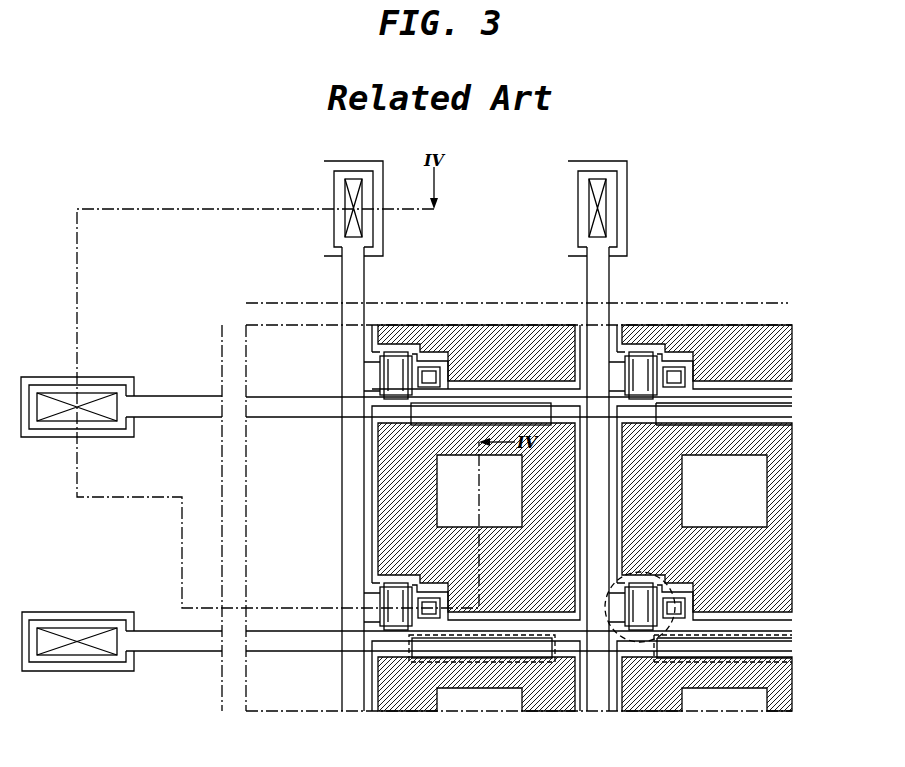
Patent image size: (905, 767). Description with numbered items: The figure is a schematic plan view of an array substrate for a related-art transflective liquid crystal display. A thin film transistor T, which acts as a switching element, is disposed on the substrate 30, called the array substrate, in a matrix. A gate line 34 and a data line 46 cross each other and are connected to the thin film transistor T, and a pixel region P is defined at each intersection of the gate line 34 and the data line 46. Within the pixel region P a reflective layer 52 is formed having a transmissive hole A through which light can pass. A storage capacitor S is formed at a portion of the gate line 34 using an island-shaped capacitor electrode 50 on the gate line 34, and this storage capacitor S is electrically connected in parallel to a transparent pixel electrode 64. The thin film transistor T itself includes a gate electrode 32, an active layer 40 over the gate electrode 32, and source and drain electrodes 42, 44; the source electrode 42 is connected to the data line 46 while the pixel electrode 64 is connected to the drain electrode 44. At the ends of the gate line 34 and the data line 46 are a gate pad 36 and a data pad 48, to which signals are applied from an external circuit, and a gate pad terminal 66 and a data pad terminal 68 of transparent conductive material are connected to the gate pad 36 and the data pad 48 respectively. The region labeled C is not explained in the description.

The substrate 30 is at (812, 316).
The gate electrode 32 is at (380, 586).
The gate line 34 is at (281, 652).
The gate pad 36 is at (92, 385).
The active layer 40 is at (645, 630).
The source electrode 42 is at (630, 627).
The drain electrode 44 is at (674, 620).
The data line 46 is at (342, 516).
The data pad 48 is at (369, 184).
The capacitor electrode 50 is at (525, 403).
The reflective layer 52 is at (378, 443).
The pixel electrode 64 is at (372, 470).
The gate pad terminal 66 is at (121, 377).
The data pad terminal 68 is at (383, 232).
The storage capacitor S is at (412, 662).
The thin film transistor T is at (640, 634).
The pixel region P is at (805, 441).
The transmissive hole A is at (767, 489).
The common electrode region C is at (785, 555).